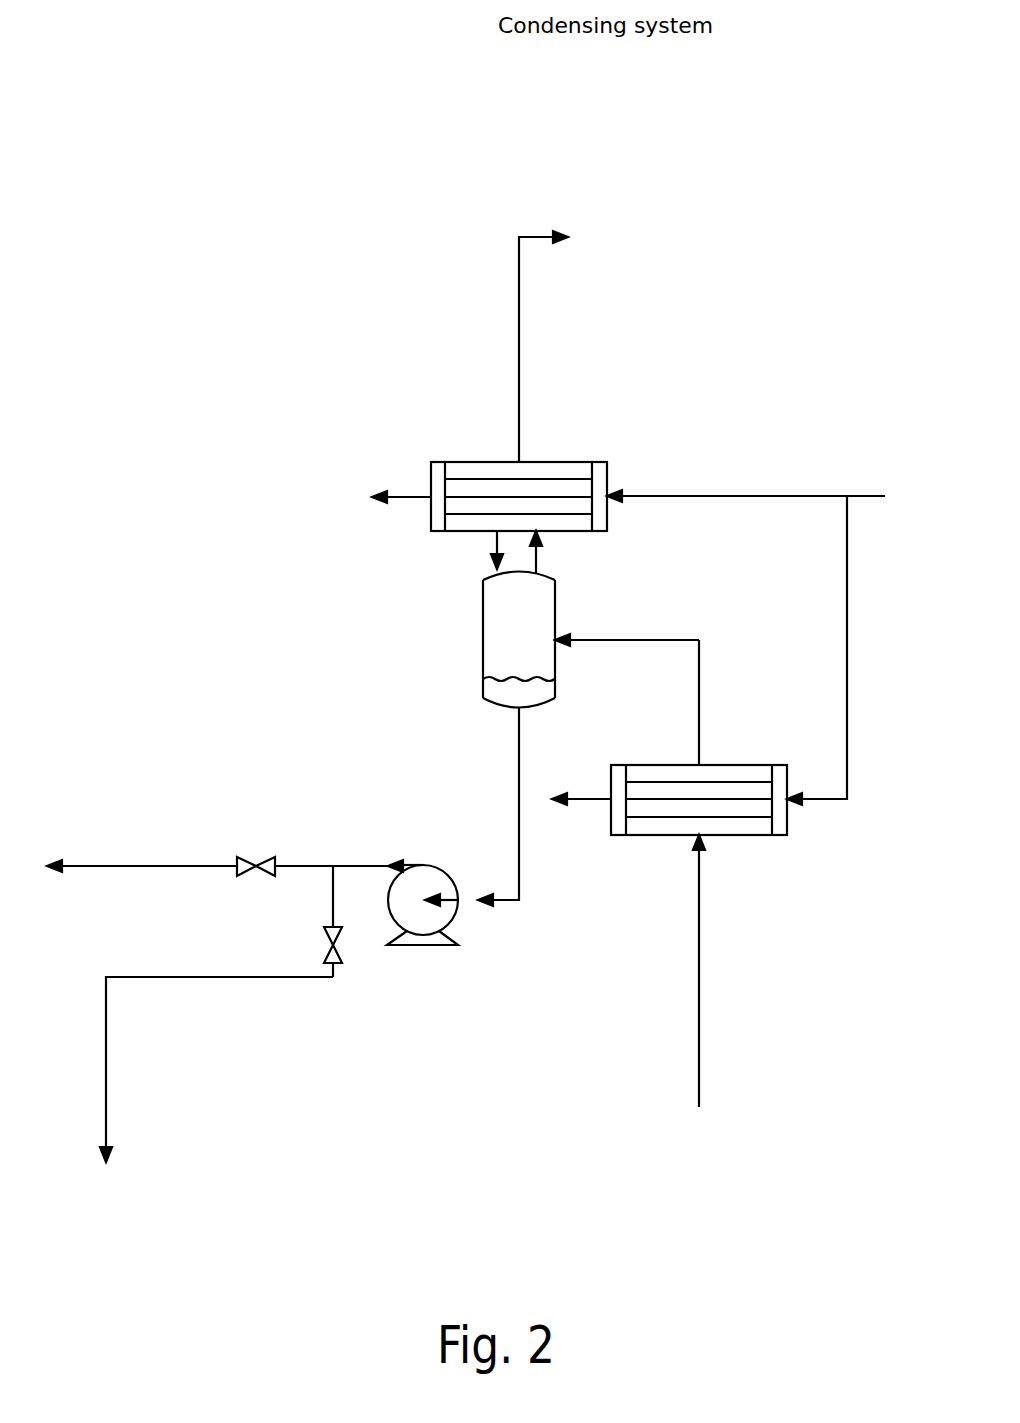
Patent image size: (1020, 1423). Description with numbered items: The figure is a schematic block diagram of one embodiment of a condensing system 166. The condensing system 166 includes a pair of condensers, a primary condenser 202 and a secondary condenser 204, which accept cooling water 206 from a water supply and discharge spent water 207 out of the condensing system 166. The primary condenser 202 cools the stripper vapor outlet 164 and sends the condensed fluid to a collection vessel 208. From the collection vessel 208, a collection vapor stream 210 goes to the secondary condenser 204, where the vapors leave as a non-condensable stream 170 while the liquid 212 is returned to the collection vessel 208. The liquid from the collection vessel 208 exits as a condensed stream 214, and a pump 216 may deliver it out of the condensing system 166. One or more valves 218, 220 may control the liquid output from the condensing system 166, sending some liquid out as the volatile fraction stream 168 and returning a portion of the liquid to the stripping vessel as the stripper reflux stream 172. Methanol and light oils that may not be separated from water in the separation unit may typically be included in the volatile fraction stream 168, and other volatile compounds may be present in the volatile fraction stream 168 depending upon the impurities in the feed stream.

The condensing system 166 is at (108, 124).
The non-condensable stream 170 is at (519, 318).
The secondary condenser 204 is at (567, 462).
The spent water 207 is at (396, 497).
The cooling water 206 is at (864, 496).
The liquid 212 is at (492, 560).
The collection vapor stream 210 is at (540, 559).
The collection vessel 208 is at (540, 628).
The condensed stream 214 is at (518, 760).
The primary condenser 202 is at (745, 765).
The stripper vapor outlet 164 is at (699, 1068).
The pump 216 is at (423, 946).
The volatile fraction stream 168 is at (105, 877).
The valve 220 is at (274, 857).
The valve 218 is at (323, 938).
The stripper reflux stream 172 is at (106, 1087).